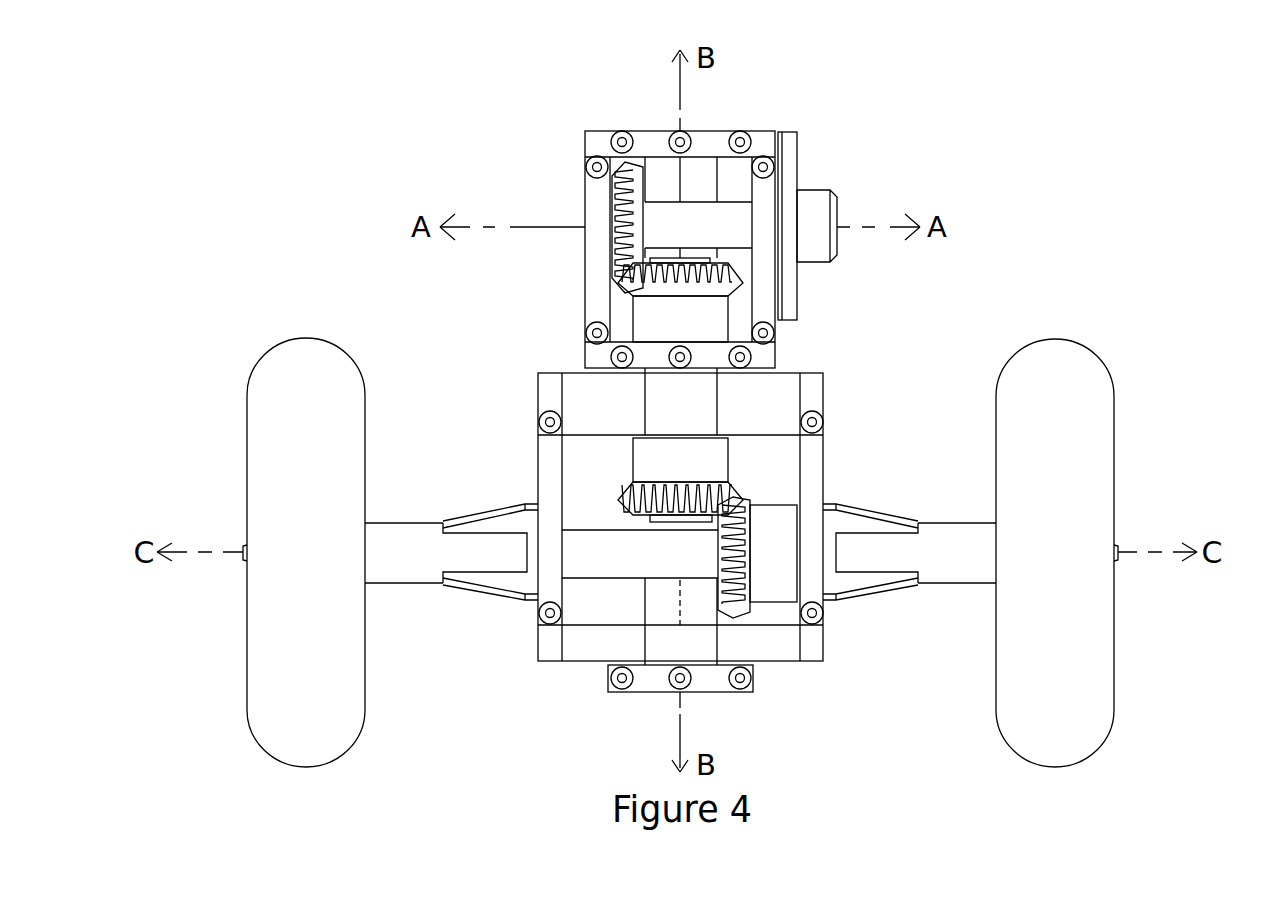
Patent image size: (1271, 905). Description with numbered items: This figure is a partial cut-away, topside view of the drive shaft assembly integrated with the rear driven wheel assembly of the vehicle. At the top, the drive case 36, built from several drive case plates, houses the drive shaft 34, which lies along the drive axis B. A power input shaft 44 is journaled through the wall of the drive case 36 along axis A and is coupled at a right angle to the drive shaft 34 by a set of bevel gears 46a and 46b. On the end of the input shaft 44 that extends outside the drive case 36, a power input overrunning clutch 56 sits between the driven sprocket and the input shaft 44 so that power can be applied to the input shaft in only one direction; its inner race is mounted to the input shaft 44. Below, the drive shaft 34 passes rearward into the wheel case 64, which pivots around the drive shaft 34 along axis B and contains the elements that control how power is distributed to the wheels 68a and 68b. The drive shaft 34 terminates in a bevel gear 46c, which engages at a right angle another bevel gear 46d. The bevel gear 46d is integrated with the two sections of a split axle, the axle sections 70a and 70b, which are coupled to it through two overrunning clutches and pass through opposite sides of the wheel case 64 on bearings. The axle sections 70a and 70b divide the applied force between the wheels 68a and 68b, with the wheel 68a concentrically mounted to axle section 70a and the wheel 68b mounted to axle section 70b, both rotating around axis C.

The drive shaft 34 is at (687, 373).
The drive case 36 is at (763, 205).
The power input shaft 44 is at (690, 220).
The bevel gear 46a is at (620, 250).
The bevel gear 46b is at (645, 293).
The bevel gear 46c is at (627, 493).
The bevel gear 46d is at (752, 600).
The power input overrunning clutch 56 is at (790, 150).
The wheel case 64 is at (810, 485).
The wheel 68a is at (331, 567).
The wheel 68b is at (1083, 567).
The axle section 70a is at (417, 552).
The axle section 70b is at (930, 547).